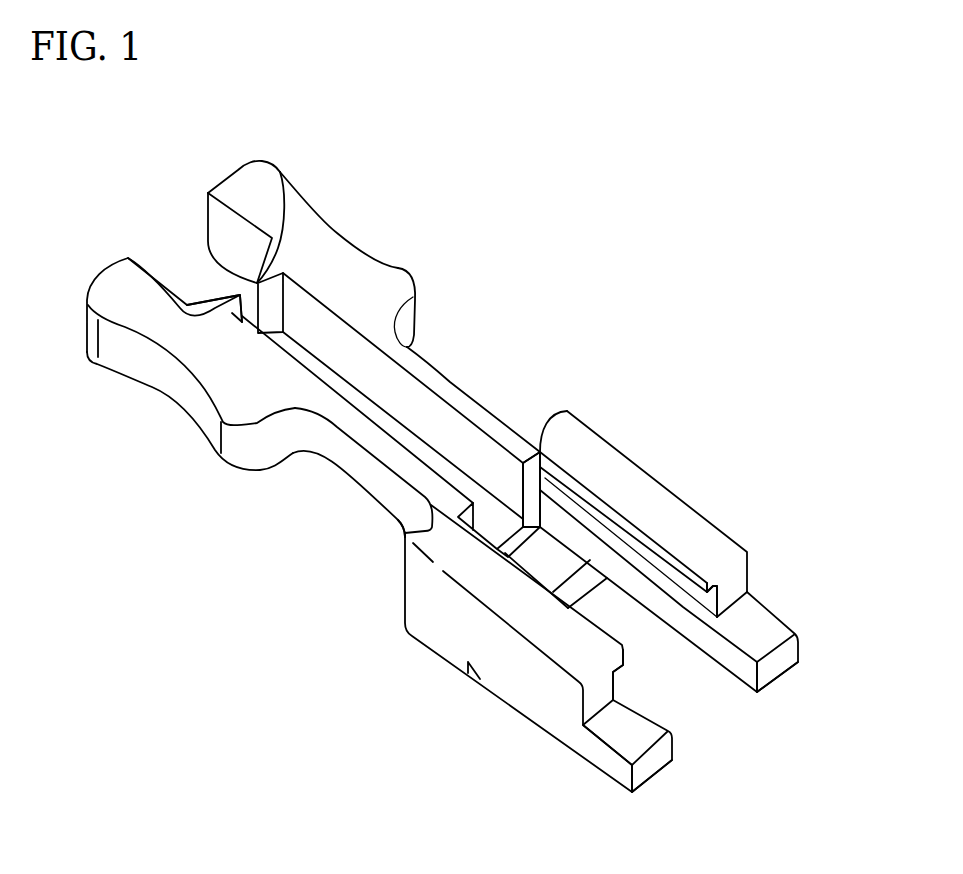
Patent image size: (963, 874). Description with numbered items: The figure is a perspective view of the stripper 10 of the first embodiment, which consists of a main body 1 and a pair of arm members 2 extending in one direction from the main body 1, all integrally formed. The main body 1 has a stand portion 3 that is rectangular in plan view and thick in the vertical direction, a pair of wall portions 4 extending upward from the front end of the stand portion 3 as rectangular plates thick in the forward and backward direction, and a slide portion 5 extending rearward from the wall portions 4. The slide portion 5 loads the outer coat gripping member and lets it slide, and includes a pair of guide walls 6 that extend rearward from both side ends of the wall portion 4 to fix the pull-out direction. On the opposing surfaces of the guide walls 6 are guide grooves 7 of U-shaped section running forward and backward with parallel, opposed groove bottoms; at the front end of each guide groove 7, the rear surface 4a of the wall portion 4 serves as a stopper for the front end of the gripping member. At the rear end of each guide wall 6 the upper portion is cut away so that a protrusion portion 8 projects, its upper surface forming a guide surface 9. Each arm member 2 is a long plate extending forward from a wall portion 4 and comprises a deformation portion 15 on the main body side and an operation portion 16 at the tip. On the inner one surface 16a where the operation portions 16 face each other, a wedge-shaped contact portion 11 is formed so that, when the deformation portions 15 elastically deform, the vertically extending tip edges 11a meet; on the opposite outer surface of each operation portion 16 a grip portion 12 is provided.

The main body 1 is at (697, 482).
The arm member 2 is at (430, 287).
The stand portion 3 is at (563, 578).
The wall portion 4 is at (542, 433).
The rear surface of the wall portion 4a is at (534, 475).
The slide portion 5 is at (629, 613).
The guide wall 6 is at (707, 547).
The guide groove 7 is at (680, 597).
The protrusion portion 8 is at (785, 666).
The guide surface 9 is at (772, 626).
The stripper 10 is at (545, 290).
The contact portion 11 is at (238, 171).
The tip edge 11a is at (240, 290).
The grip portion 12 is at (320, 230).
The deformation portion 15 is at (440, 388).
The operation portion 16 is at (320, 258).
The one surface 16a is at (340, 337).